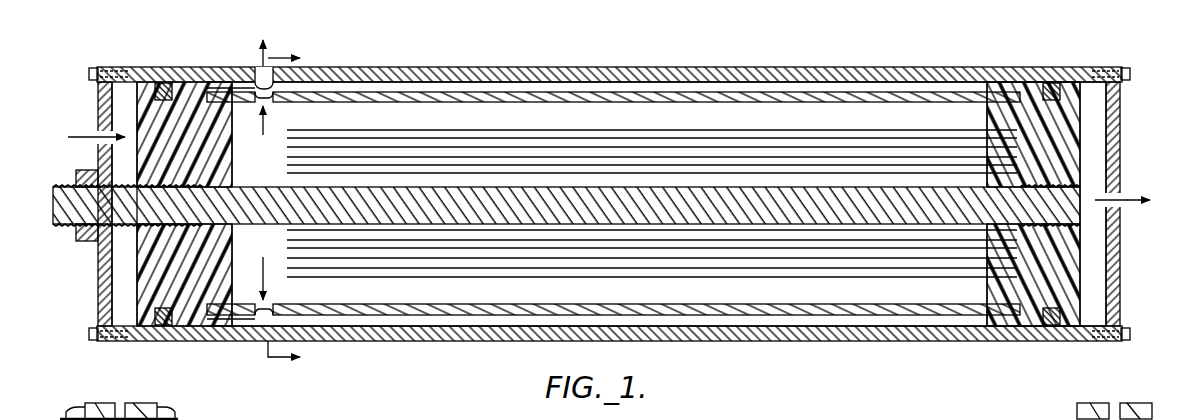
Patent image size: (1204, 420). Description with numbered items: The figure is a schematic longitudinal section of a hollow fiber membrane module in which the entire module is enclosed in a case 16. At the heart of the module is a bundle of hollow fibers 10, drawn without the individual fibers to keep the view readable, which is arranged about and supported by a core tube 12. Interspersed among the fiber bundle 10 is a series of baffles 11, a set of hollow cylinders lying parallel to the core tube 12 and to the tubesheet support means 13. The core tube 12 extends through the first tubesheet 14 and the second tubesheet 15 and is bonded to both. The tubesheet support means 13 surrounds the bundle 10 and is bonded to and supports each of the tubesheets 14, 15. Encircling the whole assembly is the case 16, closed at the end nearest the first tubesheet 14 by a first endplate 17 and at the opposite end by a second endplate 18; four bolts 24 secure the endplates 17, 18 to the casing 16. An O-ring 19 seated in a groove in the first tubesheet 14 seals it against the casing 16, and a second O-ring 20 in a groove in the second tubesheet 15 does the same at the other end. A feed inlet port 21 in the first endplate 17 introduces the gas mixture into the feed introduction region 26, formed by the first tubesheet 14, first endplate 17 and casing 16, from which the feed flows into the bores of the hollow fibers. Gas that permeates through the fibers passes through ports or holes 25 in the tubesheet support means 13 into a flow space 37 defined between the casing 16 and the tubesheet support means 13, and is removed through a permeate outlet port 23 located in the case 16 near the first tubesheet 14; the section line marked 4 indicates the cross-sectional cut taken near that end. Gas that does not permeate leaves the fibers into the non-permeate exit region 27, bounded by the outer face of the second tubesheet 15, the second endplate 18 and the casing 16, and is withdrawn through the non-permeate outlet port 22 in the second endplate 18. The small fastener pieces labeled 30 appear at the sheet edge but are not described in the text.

The bundle of hollow fibers 10 is at (260, 183).
The baffles 11 is at (784, 147).
The core tube 12 is at (57, 227).
The tubesheet support means 13 is at (500, 100).
The first tubesheet 14 is at (143, 272).
The second tubesheet 15 is at (1072, 238).
The case 16 is at (612, 69).
The first endplate 17 is at (98, 92).
The second endplate 18 is at (1112, 122).
The O-ring 19 is at (163, 82).
The second O-ring 20 is at (1047, 82).
The feed inlet port 21 is at (95, 130).
The non-permeate outlet port 22 is at (1118, 192).
The permeate outlet port 23 is at (263, 67).
The bolts 24 is at (89, 74).
The ports or holes 25 is at (250, 92).
The feed introduction region 26 is at (128, 160).
The non-permeate exit region 27 is at (1095, 280).
The fastener 30 is at (1075, 411).
The flow space 37 is at (390, 88).
The section line 4- 4 is at (295, 207).